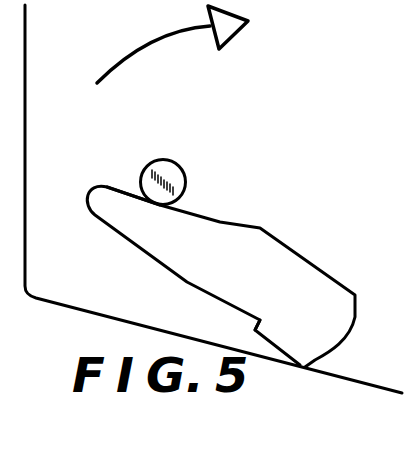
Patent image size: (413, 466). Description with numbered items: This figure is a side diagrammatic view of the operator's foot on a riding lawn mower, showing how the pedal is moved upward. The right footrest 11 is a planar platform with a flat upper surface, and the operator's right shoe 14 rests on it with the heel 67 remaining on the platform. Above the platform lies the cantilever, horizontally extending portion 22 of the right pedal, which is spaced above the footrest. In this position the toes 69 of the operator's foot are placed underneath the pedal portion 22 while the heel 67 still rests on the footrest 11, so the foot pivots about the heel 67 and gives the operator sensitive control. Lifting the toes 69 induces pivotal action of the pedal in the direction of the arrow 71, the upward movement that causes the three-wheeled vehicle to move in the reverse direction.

The right footrest 11 is at (118, 317).
The right shoe 14 is at (265, 252).
The horizontally extending portion 22 is at (199, 202).
The heel 67 is at (298, 363).
The toes 69 is at (132, 205).
The arrow 71 is at (155, 50).